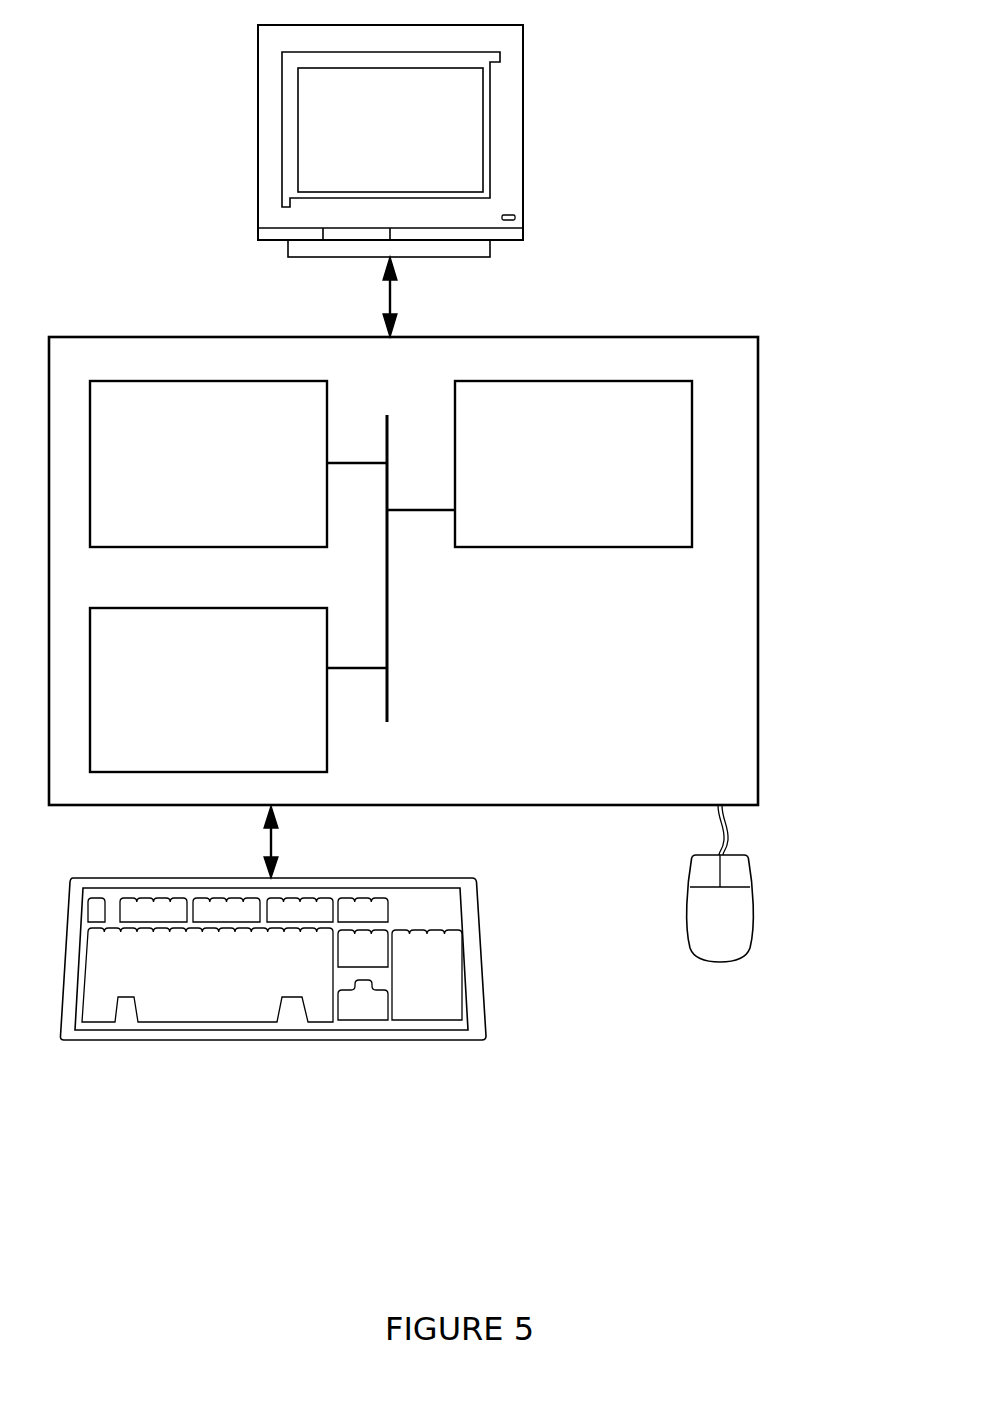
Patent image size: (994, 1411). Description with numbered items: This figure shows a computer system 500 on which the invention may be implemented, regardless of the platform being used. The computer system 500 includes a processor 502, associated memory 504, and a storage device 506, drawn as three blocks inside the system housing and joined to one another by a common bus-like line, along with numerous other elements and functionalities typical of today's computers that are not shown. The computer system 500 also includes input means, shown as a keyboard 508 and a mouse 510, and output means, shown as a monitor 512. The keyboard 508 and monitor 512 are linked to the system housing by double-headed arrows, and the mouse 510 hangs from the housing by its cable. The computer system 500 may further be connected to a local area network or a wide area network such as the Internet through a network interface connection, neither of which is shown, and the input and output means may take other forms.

The computer system 500 is at (780, 187).
The processor 502 is at (552, 474).
The memory 504 is at (185, 474).
The storage device 506 is at (182, 703).
The keyboard 508 is at (187, 986).
The mouse 510 is at (699, 931).
The monitor 512 is at (367, 146).